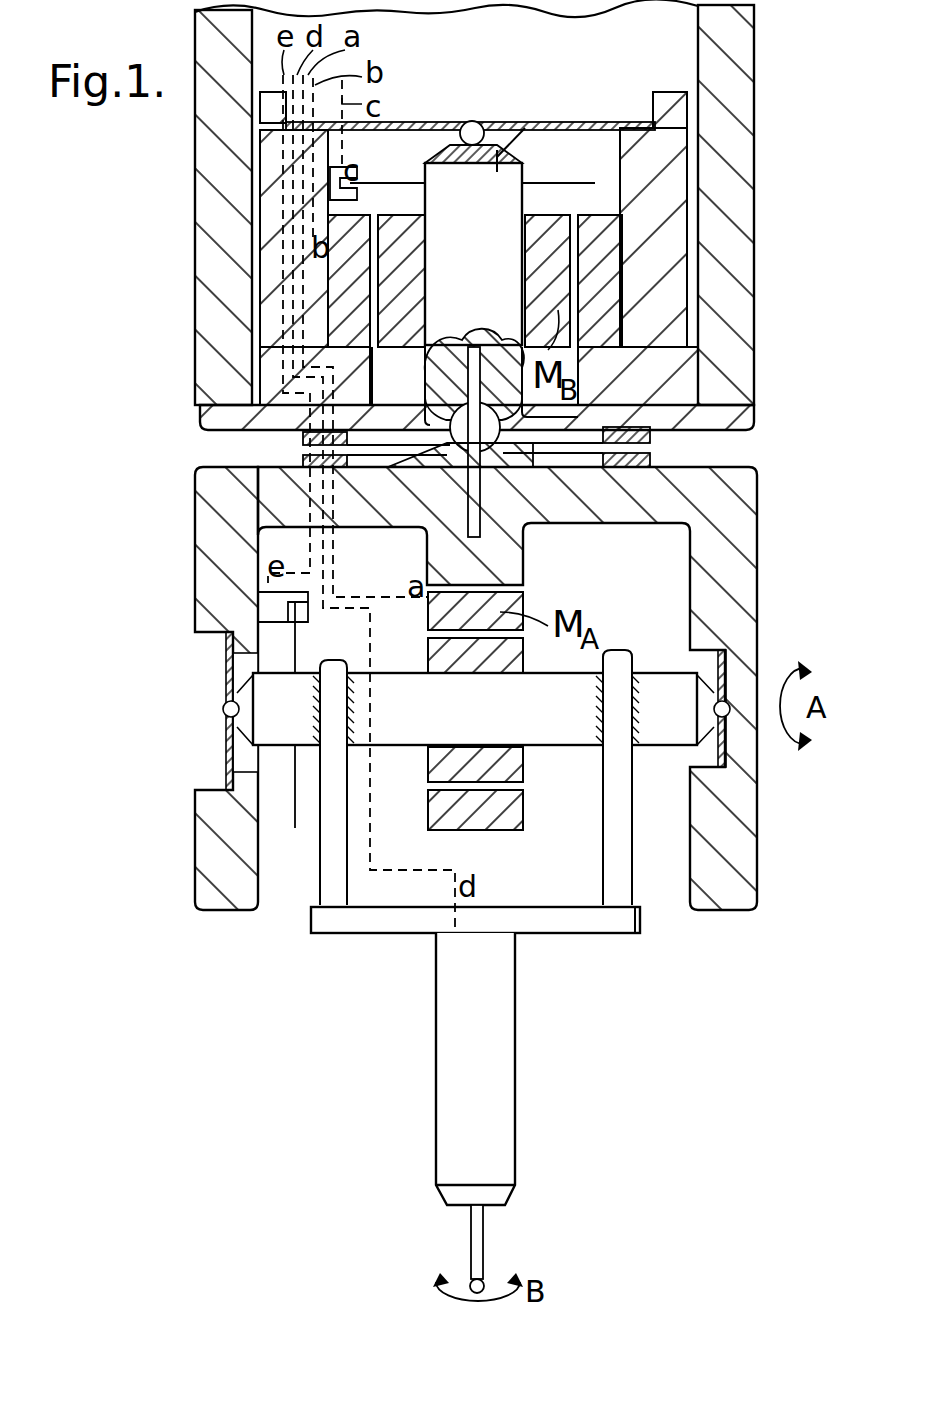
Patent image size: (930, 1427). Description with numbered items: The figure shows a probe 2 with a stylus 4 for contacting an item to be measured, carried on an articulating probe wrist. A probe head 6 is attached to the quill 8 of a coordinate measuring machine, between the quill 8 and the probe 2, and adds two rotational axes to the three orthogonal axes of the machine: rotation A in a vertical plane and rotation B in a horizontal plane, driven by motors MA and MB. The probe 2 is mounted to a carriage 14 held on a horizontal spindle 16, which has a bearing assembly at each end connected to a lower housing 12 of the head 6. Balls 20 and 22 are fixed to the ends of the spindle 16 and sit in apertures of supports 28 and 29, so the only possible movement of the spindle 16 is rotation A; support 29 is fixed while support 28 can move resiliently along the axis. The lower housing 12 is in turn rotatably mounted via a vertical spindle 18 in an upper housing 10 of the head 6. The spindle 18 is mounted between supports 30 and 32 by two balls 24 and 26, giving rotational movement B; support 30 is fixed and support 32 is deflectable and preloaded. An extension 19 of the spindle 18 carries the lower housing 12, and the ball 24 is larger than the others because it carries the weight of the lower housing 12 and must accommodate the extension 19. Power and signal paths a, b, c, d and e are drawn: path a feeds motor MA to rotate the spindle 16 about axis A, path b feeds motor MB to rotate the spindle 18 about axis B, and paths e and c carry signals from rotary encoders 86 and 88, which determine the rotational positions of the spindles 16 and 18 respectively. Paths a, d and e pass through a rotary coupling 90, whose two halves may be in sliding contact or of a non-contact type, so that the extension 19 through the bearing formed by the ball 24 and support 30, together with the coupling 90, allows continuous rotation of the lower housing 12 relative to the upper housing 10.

The probe 2 is at (450, 1046).
The stylus 4 is at (473, 1239).
The probe head 6 is at (193, 548).
The quill 8 is at (193, 248).
The upper housing 10 is at (754, 418).
The lower housing 12 is at (742, 545).
The carriage 14 is at (322, 872).
The horizontal spindle 16 is at (580, 745).
The vertical spindle 18 is at (500, 150).
The extension 19 is at (482, 500).
The ball 20 is at (226, 714).
The ball 22 is at (716, 714).
The ball 24 is at (440, 380).
The ball 26 is at (472, 121).
The support 28 is at (228, 682).
The support 29 is at (727, 668).
The support 30 is at (452, 427).
The support 32 is at (574, 122).
The rotary encoder 86 is at (298, 640).
The rotary encoder 88 is at (392, 183).
The rotary coupling 90 is at (305, 440).